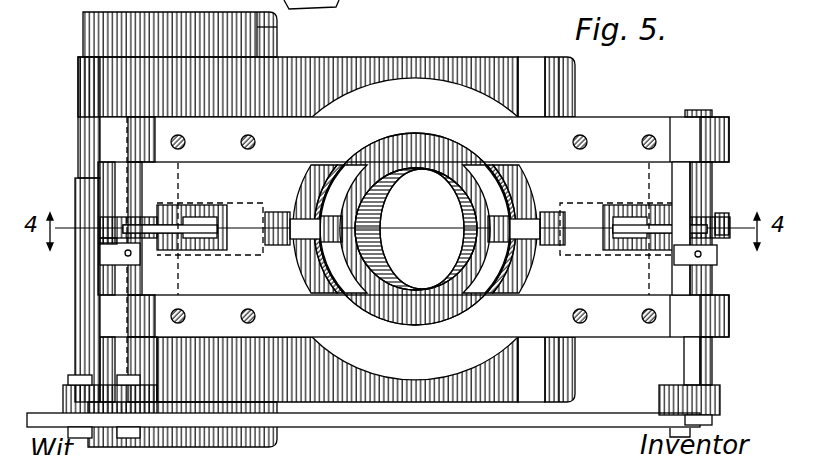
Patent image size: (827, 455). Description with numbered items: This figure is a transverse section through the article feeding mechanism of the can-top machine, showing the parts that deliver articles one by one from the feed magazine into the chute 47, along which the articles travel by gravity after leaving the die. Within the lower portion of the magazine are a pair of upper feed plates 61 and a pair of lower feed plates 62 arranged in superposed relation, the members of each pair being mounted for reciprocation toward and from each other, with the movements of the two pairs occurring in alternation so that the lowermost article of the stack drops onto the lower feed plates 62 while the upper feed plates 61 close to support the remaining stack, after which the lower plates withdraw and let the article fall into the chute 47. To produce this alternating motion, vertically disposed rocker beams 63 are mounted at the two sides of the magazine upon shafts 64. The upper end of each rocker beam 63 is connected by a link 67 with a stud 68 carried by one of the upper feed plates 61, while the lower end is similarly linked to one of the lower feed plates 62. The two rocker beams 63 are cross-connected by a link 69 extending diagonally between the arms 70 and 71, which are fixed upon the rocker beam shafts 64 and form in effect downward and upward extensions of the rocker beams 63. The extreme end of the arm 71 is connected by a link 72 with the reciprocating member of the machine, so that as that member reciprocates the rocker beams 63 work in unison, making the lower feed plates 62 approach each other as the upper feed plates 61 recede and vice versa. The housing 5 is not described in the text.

The stator housing 5 is at (325, 229).
The chute 47 is at (402, 313).
The upper feed plates 61 is at (414, 227).
The lower feed plates 62 is at (360, 287).
The rocker beams 63 is at (100, 246).
The shafts 64 is at (123, 283).
The link 67 is at (178, 251).
The stud 68 is at (226, 206).
The link 69 is at (325, 420).
The arm 70 is at (721, 403).
The arm 71 is at (70, 381).
The link 72 is at (42, 427).